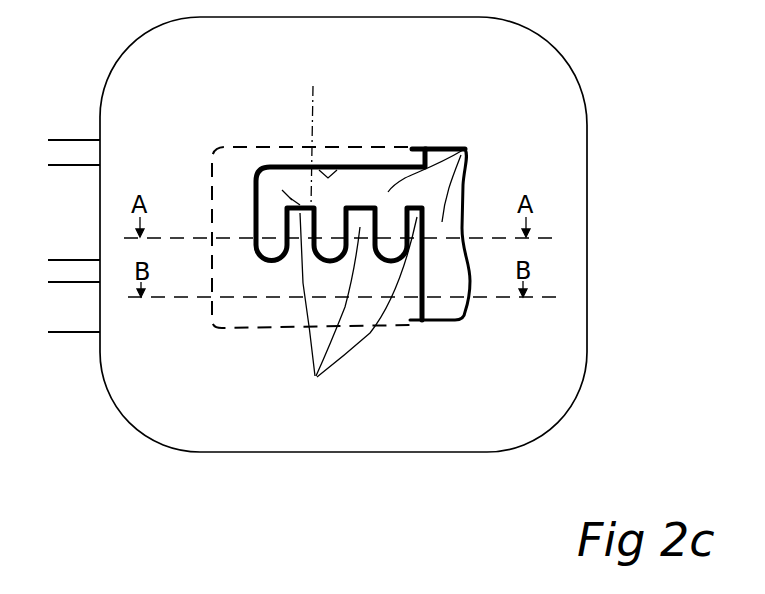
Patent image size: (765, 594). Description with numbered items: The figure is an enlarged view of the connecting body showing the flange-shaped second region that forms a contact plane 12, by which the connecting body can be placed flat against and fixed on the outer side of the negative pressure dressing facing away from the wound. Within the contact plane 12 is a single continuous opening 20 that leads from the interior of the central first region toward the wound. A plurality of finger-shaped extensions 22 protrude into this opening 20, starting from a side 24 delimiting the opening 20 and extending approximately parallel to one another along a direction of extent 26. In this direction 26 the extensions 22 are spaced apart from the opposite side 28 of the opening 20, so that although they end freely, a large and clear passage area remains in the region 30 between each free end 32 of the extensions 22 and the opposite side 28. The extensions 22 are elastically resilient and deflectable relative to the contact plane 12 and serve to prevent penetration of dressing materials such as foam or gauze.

The contact plane 12 is at (178, 78).
The opening 20 is at (466, 148).
The finger-shaped extensions 22 is at (352, 312).
The side 24 is at (255, 240).
The direction of extent 26 is at (312, 122).
The opposite side 28 is at (337, 167).
The region 30 is at (287, 190).
The free end 32 is at (297, 201).